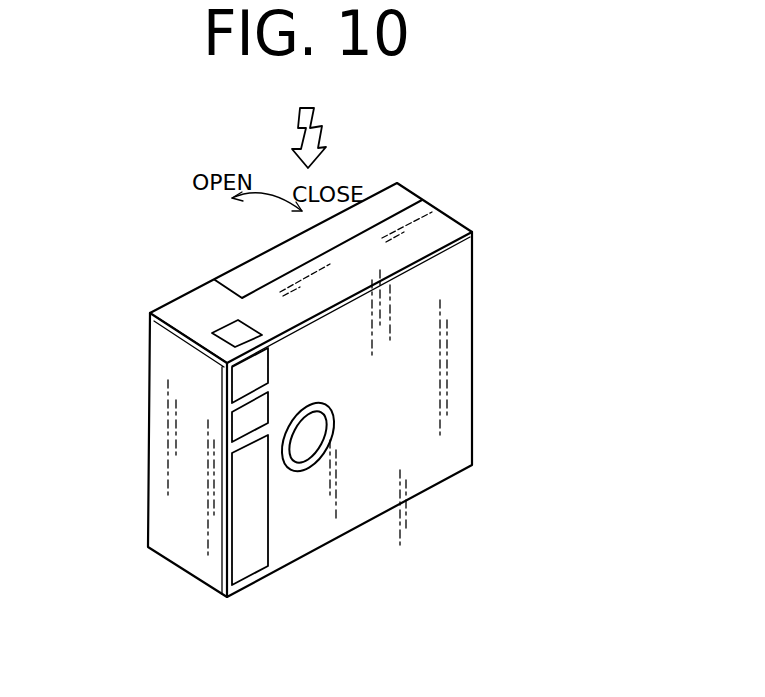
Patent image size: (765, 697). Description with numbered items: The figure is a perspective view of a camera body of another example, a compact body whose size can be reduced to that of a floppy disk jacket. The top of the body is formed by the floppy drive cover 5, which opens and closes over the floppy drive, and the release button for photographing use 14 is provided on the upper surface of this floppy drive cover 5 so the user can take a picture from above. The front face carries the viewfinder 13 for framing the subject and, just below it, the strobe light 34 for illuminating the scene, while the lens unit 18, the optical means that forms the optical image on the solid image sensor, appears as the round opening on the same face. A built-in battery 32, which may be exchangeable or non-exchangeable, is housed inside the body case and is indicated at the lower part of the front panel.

The floppy drive cover 5 is at (387, 204).
The release button for photographing use 14 is at (232, 333).
The viewfinder 13 is at (243, 383).
The strobe light 34 is at (242, 428).
The built-in battery 32 is at (250, 568).
The lens unit 18 is at (310, 445).